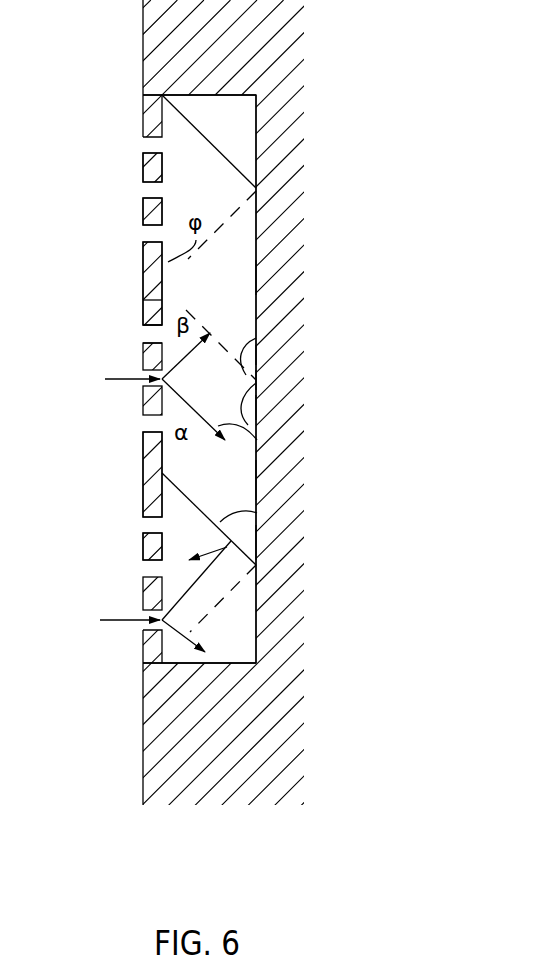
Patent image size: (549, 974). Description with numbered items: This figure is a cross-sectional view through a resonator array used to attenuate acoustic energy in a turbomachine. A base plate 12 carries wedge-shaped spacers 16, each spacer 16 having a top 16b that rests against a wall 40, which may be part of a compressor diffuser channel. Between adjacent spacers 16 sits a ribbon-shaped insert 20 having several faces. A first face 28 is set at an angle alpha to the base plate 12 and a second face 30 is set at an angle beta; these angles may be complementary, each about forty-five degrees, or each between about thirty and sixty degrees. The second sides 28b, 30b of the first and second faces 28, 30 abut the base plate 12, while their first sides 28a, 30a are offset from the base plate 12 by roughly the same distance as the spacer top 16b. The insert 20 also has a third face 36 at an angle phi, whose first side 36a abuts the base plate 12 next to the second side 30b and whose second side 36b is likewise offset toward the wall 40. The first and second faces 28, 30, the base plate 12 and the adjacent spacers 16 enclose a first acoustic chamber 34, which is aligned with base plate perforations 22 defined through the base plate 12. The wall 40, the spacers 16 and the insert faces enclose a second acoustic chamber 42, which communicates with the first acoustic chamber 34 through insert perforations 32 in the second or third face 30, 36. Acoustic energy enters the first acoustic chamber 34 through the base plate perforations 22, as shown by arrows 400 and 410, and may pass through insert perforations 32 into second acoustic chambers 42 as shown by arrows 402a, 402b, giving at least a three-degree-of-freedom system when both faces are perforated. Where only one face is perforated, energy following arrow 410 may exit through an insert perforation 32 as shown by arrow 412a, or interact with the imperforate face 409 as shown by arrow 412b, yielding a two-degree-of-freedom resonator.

The base plate 12 is at (143, 640).
The spacer 16 is at (218, 657).
The top of spacer 16b is at (258, 612).
The insert 20 is at (257, 130).
The base plate perforation 22 is at (140, 190).
The first face 28 is at (257, 440).
The first side of first face 28a is at (257, 410).
The second side of first face 28b is at (160, 470).
The second face 30 is at (240, 360).
The first side of second face 30a is at (257, 355).
The second side of second face 30b is at (143, 305).
The insert perforation 32 is at (235, 350).
The first acoustic chamber 34 is at (239, 380).
The third face 36 is at (257, 222).
The first side of third face 36a is at (143, 270).
The second side of third face 36b is at (257, 190).
The wall 40 is at (257, 538).
The second acoustic chamber 42 is at (249, 277).
The arrow 400 is at (105, 379).
The arrow 402a is at (257, 483).
The arrow 402b is at (168, 340).
The imperforate face 409 is at (257, 513).
The arrow 410 is at (100, 620).
The arrow 412a is at (190, 635).
The arrow 412b is at (165, 546).